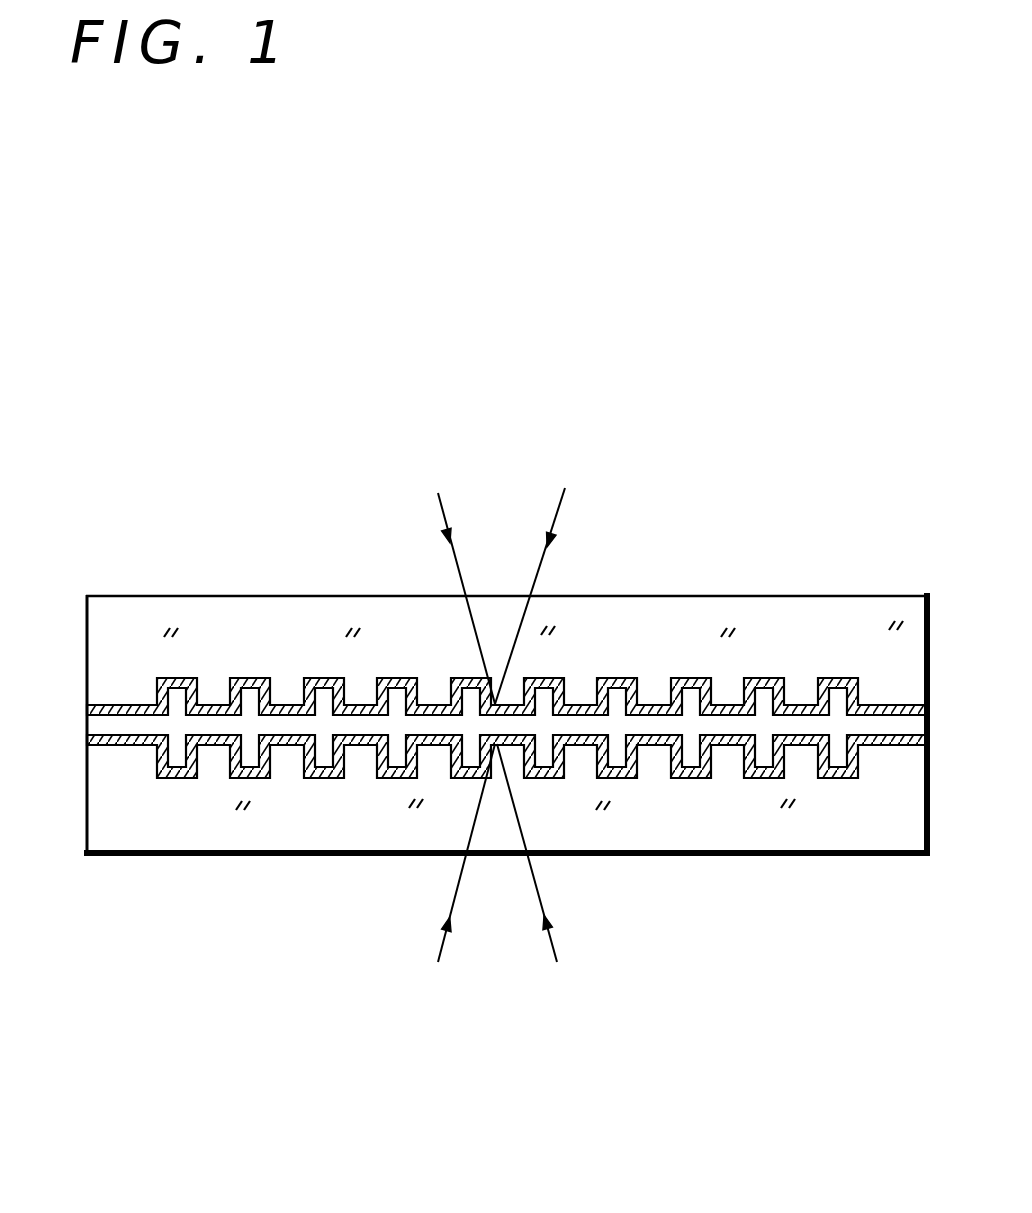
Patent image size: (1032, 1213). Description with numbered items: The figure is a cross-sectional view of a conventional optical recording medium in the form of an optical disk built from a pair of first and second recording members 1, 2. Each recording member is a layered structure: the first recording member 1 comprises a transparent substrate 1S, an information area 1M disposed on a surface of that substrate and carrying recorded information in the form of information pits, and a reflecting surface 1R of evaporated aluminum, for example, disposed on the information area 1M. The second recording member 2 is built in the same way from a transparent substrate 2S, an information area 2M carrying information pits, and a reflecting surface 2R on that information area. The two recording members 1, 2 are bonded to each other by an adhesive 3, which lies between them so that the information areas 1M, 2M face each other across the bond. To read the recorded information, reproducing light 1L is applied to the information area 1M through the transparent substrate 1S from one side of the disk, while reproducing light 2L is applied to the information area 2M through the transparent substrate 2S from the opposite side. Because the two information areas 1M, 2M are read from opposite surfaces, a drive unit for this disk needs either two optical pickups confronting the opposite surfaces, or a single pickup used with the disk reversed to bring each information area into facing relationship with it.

The first recording member 1 is at (732, 382).
The reproducing light 1L is at (445, 520).
The reflecting surface 1R is at (612, 686).
The information area 1M is at (652, 700).
The transparent substrate 1S is at (685, 637).
The second recording member 2 is at (765, 1045).
The reproducing light 2L is at (443, 945).
The reflecting surface 2R is at (612, 765).
The information area 2M is at (652, 750).
The transparent substrate 2S is at (698, 825).
The adhesive 3 is at (118, 722).